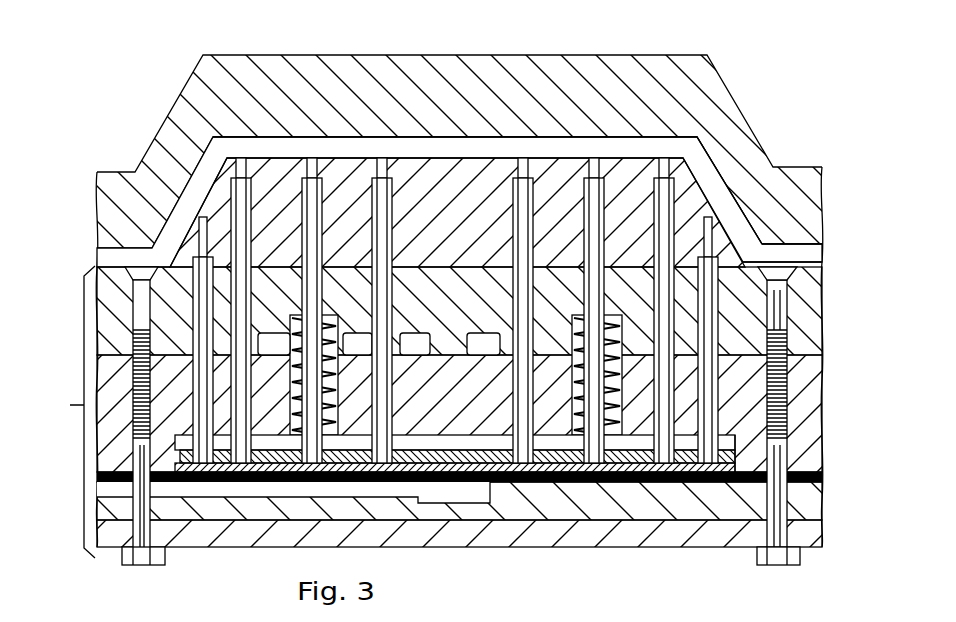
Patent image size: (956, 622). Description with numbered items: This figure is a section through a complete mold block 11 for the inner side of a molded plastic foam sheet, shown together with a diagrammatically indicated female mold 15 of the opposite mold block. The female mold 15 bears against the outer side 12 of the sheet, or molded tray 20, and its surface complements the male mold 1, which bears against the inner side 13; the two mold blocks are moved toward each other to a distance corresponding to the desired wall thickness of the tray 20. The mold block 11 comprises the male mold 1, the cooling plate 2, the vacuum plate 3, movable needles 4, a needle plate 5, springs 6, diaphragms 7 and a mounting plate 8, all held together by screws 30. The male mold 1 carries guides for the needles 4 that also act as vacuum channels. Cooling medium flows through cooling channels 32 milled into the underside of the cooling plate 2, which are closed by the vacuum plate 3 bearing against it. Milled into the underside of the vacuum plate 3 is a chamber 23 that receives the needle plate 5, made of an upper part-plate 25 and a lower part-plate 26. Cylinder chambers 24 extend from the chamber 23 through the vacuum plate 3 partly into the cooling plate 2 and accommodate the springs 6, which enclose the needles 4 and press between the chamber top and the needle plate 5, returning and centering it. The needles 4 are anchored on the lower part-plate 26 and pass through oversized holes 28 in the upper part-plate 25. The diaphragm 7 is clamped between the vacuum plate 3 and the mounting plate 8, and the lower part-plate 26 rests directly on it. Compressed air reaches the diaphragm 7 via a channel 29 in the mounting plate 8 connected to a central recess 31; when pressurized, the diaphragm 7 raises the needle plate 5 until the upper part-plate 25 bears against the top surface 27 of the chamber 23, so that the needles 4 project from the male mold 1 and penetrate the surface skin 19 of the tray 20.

The male mold 1 is at (218, 205).
The cooling plate 2 is at (262, 277).
The vacuum plate 3 is at (497, 390).
The movable needles 4 is at (523, 200).
The needle plate 5 is at (738, 452).
The springs 6 is at (613, 310).
The diaphragm 7 is at (698, 465).
The mounting plate 8 is at (120, 508).
The mold block 11 is at (71, 412).
The outer side 12 is at (708, 135).
The inner side 13 is at (693, 165).
The female mold 15 is at (570, 63).
The surface skin 19 is at (808, 283).
The molded tray 20 is at (805, 256).
The chamber 23 is at (740, 447).
The cylinder chambers 24 is at (567, 430).
The upper part-plate 25 is at (740, 458).
The lower part-plate 26 is at (816, 476).
The top surface 27 is at (412, 438).
The holes 28 is at (633, 478).
The channel 29 is at (277, 493).
The screws 30 is at (143, 512).
The central recess 31 is at (473, 495).
The cooling channels 32 is at (510, 333).